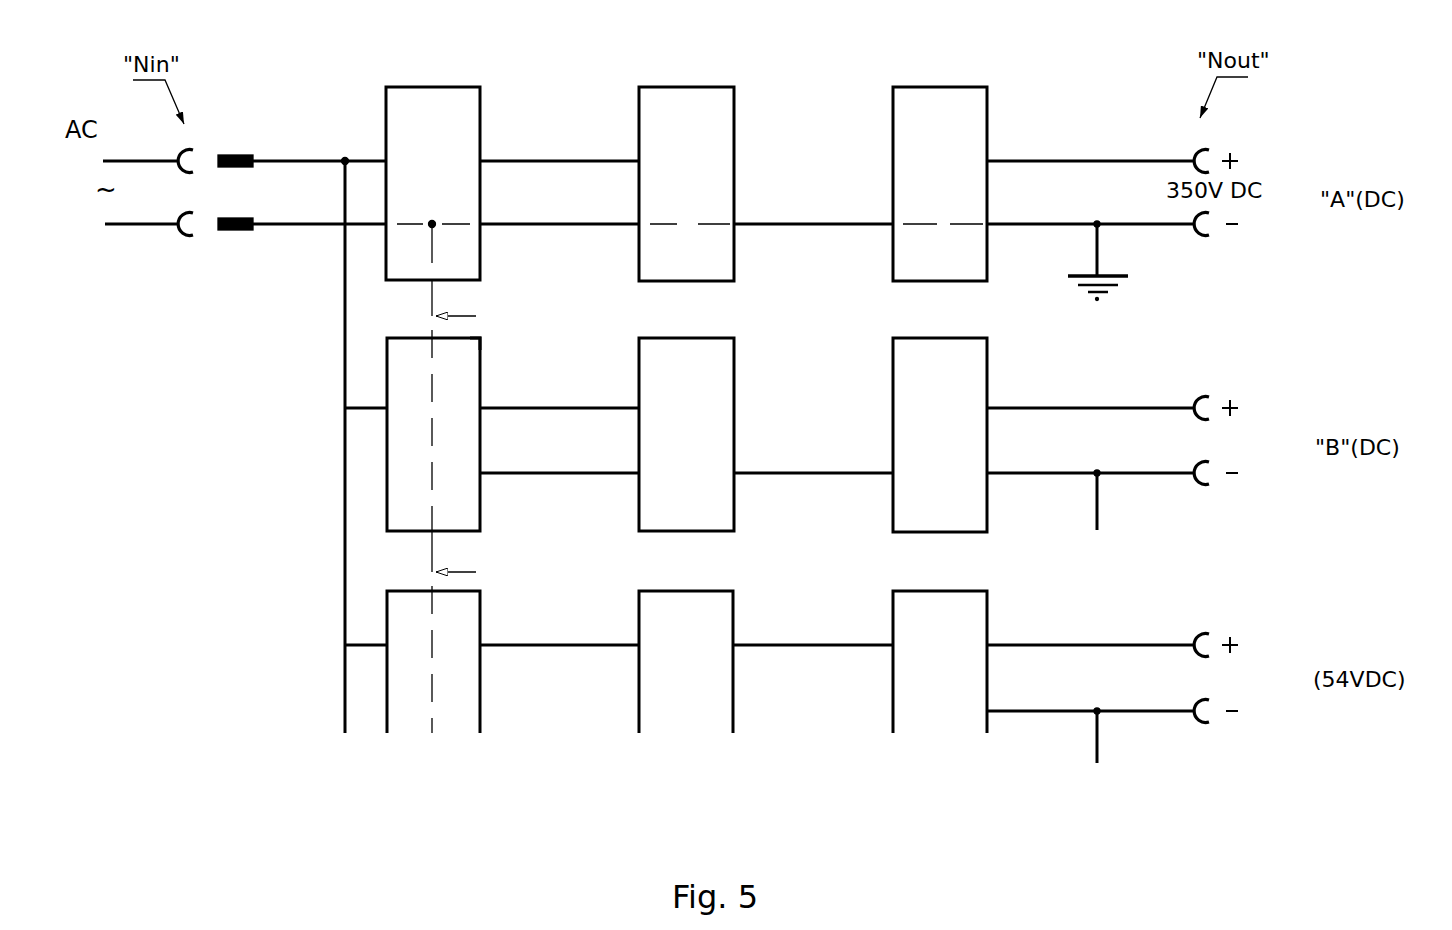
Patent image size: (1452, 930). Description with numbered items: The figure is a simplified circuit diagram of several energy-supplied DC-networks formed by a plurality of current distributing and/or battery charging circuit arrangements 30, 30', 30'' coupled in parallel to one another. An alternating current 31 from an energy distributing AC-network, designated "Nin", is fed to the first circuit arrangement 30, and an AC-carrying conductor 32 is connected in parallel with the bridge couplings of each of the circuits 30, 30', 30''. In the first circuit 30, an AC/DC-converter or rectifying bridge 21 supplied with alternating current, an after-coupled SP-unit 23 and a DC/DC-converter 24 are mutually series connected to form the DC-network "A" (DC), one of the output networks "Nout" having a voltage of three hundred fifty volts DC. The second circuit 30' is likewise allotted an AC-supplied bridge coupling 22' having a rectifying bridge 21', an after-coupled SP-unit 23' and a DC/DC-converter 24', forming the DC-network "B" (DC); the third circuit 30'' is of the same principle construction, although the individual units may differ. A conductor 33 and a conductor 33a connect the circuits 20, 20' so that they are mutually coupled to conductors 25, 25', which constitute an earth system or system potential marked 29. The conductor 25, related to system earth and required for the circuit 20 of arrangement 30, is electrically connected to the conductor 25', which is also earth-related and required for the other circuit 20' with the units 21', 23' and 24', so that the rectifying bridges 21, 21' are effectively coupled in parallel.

The circuit 20 is at (559, 126).
The circuit 20' is at (559, 371).
The AC/DC-converter 21 is at (433, 183).
The AC/DC-converter 21' is at (433, 434).
The bridge coupling 22' is at (506, 324).
The SP-unit 23 is at (686, 184).
The SP-unit 23' is at (686, 434).
The DC/DC-converter 24 is at (940, 184).
The DC/DC-converter 24' is at (940, 435).
The conductor 25 is at (686, 246).
The conductor 25' is at (686, 496).
The ground connection 29 is at (1087, 492).
The circuit arrangement 30 is at (417, 157).
The circuit arrangement 30' is at (421, 412).
The circuit arrangement 30'' is at (421, 635).
The alternating current 31 is at (148, 193).
The AC-carrying conductor 32 is at (290, 158).
The conductor 33 is at (457, 405).
The conductor 33a is at (463, 632).